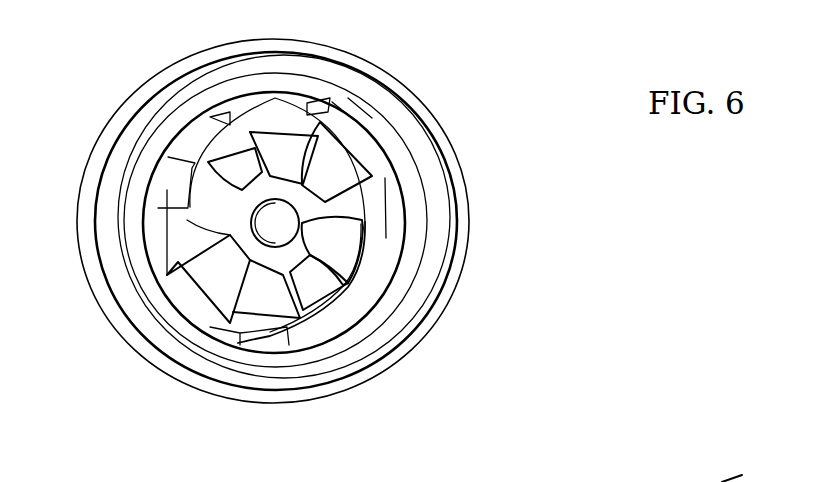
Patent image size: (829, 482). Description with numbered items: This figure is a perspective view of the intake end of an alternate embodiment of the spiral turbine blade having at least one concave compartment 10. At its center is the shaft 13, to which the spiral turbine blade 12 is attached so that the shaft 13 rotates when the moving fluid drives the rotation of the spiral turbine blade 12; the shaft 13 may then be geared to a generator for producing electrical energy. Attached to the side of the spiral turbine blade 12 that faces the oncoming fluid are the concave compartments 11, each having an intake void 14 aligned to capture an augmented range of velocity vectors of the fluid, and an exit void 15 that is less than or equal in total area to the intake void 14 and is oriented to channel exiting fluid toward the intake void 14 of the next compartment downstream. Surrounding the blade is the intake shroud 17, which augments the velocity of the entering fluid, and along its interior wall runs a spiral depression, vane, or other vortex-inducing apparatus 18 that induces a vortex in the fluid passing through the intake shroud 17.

The spiral turbine blade having at least one concave compartment 10 is at (478, 123).
The concave compartment 11 is at (337, 168).
The spiral turbine blade 12 is at (399, 214).
The shaft 13 is at (289, 232).
The intake void 14 is at (370, 278).
The exit void 15 is at (350, 283).
The intake shroud 17 is at (86, 213).
The vortex-inducing apparatus 18 is at (333, 370).